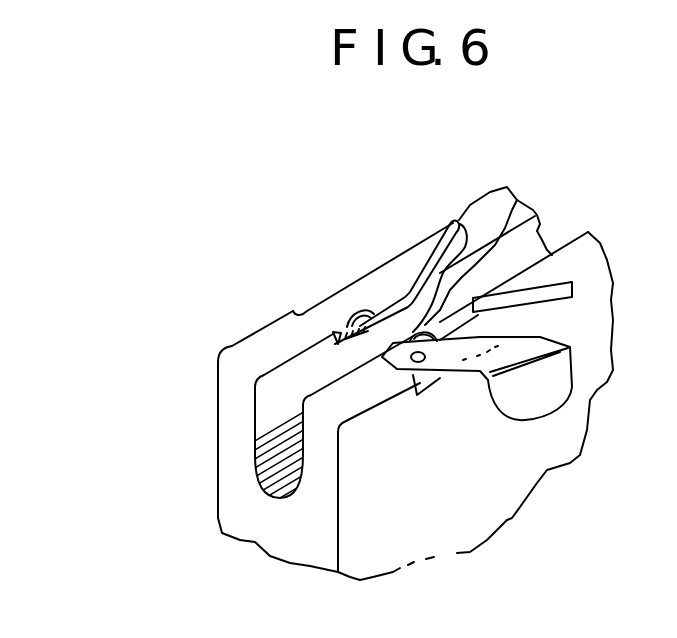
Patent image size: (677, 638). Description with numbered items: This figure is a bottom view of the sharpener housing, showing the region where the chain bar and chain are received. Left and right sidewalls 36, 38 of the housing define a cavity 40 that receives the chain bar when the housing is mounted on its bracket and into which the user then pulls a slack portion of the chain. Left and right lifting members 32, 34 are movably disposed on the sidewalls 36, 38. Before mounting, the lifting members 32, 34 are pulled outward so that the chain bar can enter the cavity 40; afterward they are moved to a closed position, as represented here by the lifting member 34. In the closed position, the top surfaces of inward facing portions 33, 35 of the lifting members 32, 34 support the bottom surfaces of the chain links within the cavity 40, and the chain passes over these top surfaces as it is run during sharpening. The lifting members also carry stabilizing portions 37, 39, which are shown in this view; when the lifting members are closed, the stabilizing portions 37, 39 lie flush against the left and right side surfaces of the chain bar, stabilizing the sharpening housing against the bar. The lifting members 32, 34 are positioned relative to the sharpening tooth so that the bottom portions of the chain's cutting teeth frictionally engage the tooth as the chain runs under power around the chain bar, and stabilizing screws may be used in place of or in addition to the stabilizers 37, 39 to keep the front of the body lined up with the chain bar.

The left lifting member 32 is at (556, 380).
The inward facing portion 33 is at (535, 288).
The right lifting member 34 is at (425, 233).
The inward facing portion 35 is at (393, 303).
The left sidewall 36 is at (228, 348).
The stabilizing portion 37 is at (350, 308).
The right sidewall 38 is at (318, 424).
The stabilizing portion 39 is at (517, 200).
The cavity 40 is at (273, 398).